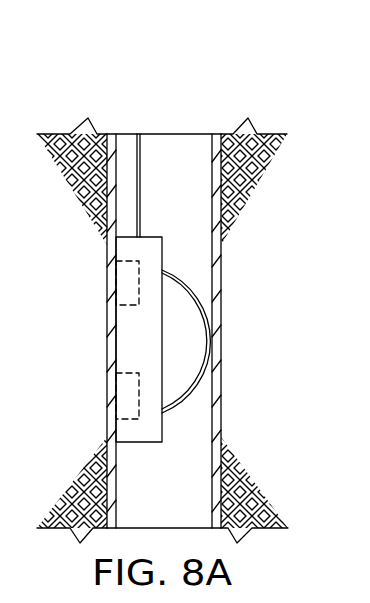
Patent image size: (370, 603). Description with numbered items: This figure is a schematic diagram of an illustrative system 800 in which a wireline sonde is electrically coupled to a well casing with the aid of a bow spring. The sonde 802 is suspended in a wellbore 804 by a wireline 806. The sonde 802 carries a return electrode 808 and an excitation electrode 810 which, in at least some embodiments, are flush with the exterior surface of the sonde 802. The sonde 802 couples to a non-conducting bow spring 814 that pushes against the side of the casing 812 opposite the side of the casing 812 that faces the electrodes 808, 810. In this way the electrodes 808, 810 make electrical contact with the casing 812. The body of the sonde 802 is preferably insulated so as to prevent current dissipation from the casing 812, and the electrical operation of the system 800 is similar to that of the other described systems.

The system 800 is at (262, 78).
The sonde 802 is at (148, 443).
The wellbore 804 is at (208, 405).
The wireline 806 is at (139, 141).
The return electrode 808 is at (118, 258).
The excitation electrode 810 is at (118, 373).
The casing 812 is at (108, 338).
The bow spring 814 is at (183, 275).